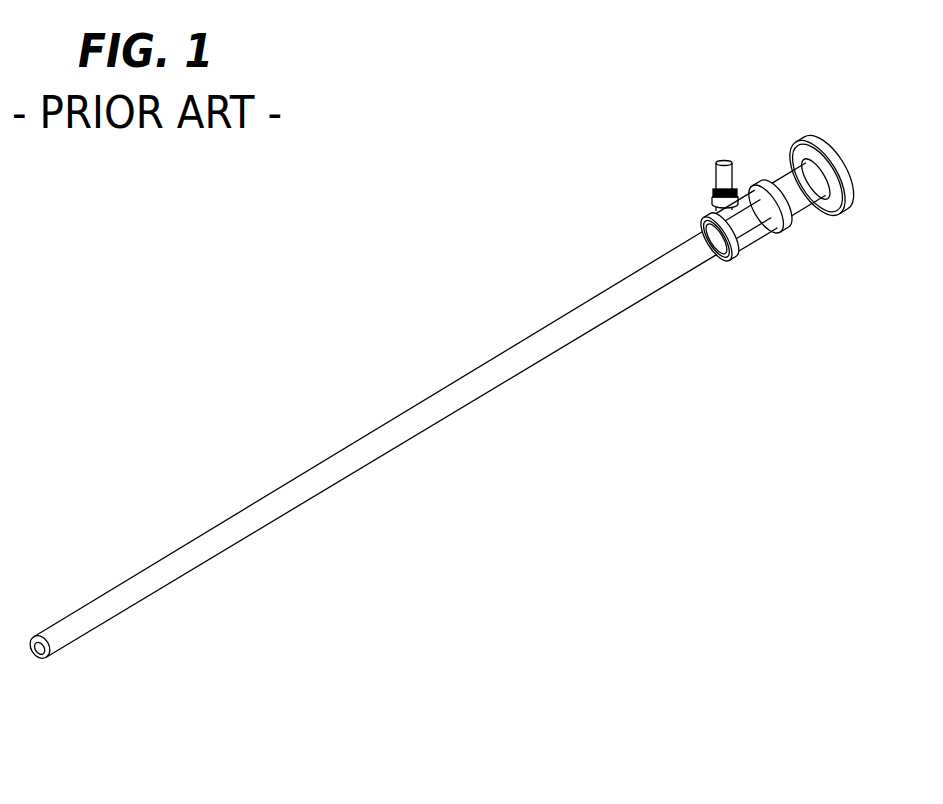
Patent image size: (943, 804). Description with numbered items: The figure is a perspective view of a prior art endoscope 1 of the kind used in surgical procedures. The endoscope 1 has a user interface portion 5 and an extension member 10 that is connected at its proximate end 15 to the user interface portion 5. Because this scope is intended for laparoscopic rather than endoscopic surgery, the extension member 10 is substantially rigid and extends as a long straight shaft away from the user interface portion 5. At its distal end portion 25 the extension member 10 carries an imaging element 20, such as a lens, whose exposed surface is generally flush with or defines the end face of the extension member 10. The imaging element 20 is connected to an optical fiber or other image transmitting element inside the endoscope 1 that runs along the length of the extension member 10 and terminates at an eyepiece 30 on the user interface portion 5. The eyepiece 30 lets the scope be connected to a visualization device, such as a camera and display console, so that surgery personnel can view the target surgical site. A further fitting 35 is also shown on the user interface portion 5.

The endoscope 1 is at (352, 314).
The user interface portion 5 is at (775, 213).
The extension member 10 is at (367, 452).
The proximate end 15 is at (710, 246).
The imaging element 20 is at (42, 651).
The distal end portion 25 is at (48, 628).
The eyepiece 30 is at (830, 143).
The light post connector 35 is at (713, 222).